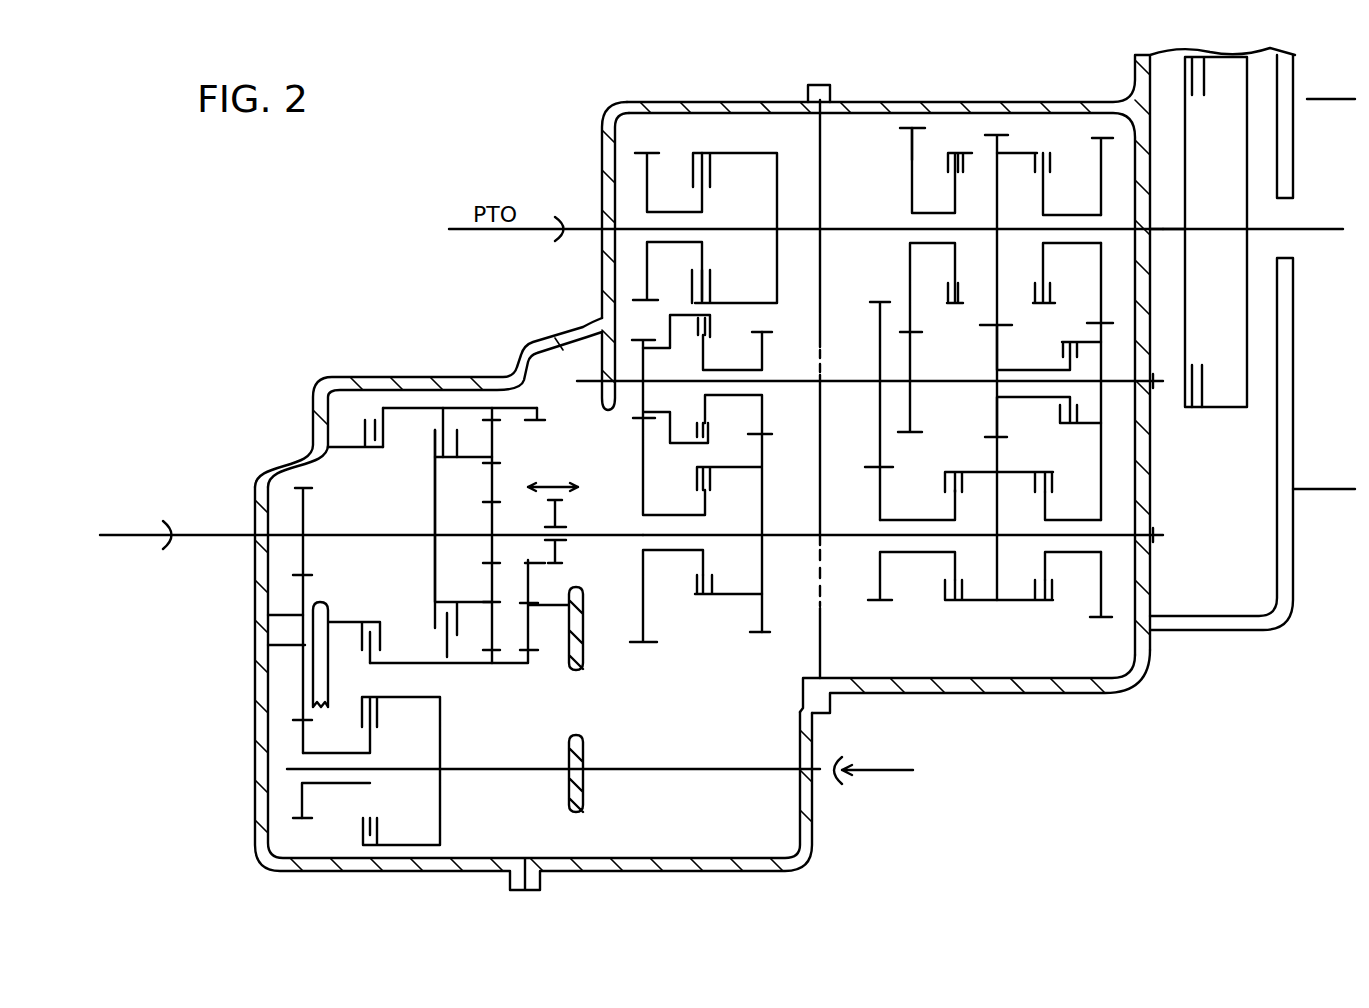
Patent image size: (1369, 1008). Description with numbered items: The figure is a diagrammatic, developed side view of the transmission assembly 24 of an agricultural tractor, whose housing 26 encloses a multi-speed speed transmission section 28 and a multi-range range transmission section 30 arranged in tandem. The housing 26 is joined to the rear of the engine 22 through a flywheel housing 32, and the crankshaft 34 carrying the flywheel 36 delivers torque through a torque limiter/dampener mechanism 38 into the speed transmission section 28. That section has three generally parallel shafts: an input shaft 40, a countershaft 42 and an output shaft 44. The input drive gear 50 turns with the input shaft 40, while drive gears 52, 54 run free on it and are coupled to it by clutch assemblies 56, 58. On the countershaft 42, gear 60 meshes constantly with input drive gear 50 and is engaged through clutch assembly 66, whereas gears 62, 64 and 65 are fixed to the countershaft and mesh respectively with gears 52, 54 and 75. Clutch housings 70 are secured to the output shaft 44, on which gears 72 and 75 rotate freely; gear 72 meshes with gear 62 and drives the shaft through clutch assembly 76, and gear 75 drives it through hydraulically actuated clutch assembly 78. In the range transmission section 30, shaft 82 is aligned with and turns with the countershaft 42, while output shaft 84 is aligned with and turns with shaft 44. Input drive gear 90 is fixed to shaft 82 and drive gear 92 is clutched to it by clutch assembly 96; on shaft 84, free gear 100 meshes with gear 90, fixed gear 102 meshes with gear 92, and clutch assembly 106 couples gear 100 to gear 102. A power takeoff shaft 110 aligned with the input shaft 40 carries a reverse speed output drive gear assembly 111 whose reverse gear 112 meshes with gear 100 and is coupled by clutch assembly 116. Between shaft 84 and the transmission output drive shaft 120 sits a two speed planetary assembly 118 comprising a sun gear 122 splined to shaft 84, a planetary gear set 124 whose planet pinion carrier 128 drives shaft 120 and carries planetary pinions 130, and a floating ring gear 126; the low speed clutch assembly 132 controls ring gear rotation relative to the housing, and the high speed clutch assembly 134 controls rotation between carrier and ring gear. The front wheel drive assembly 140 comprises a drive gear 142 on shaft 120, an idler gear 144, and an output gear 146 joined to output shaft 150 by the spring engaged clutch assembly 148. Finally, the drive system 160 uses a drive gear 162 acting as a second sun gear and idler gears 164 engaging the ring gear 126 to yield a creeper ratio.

The engine 22 is at (1318, 490).
The transmission assembly 24 is at (810, 855).
The housing 26 is at (1130, 695).
The speed transmission section 28 is at (1010, 100).
The range transmission section 30 is at (608, 100).
The flywheel housing 32 is at (1212, 633).
The crankshaft 34 is at (1293, 228).
The flywheel 36 is at (1250, 137).
The torque limiter/dampener mechanism 38 is at (1185, 410).
The input shaft 40 is at (1160, 228).
The countershaft 42 is at (1157, 382).
The output shaft 44 is at (1157, 540).
The input drive gear 50 is at (1000, 143).
The drive gear 52 is at (1103, 165).
The drive gear 54 is at (912, 140).
The clutch assembly 56 is at (1058, 163).
The clutch assembly 58 is at (957, 148).
The gear 60 is at (1000, 348).
The gear 62 is at (1103, 333).
The gear 64 is at (912, 352).
The gear 65 is at (878, 322).
The clutch assembly 66 is at (1070, 340).
The clutch housings 70 is at (1003, 468).
The gear 72 is at (1101, 583).
The gear 75 is at (878, 580).
The clutch assembly 76 is at (1043, 607).
The hydraulically actuated clutch assembly 78 is at (940, 607).
The shaft 82 is at (628, 385).
The output shaft 84 is at (788, 536).
The input drive gear 90 is at (637, 362).
The drive gear 92 is at (762, 345).
The clutch assembly 96 is at (724, 330).
The gear 100 is at (640, 587).
The gear 102 is at (762, 452).
The clutch assembly 106 is at (700, 597).
The power takeoff (PTO) shaft 110 is at (627, 233).
The reverse speed output drive gear assembly 111 is at (675, 133).
The reverse gear 112 is at (642, 185).
The clutch assembly 116 is at (715, 160).
The two speed planetary assembly 118 is at (408, 403).
The transmission output drive shaft 120 is at (213, 540).
The sun gear 122 is at (490, 520).
The planetary gear set 124 is at (430, 548).
The floating ring gear 126 is at (465, 405).
The planet pinion carrier 128 is at (433, 500).
The planetary pinions 130 is at (497, 433).
The low speed clutch assembly 132 is at (358, 428).
The high speed clutch assembly 134 is at (428, 440).
The front wheel drive assembly 140 is at (292, 677).
The drive gear 142 is at (300, 505).
The idler gear 144 is at (268, 615).
The output gear 146 is at (303, 805).
The spring engaged clutch assembly 148 is at (358, 825).
The output shaft 150 is at (490, 768).
The drive system 160 is at (541, 475).
The drive gear 162 is at (565, 512).
The idler gears 164 is at (540, 578).